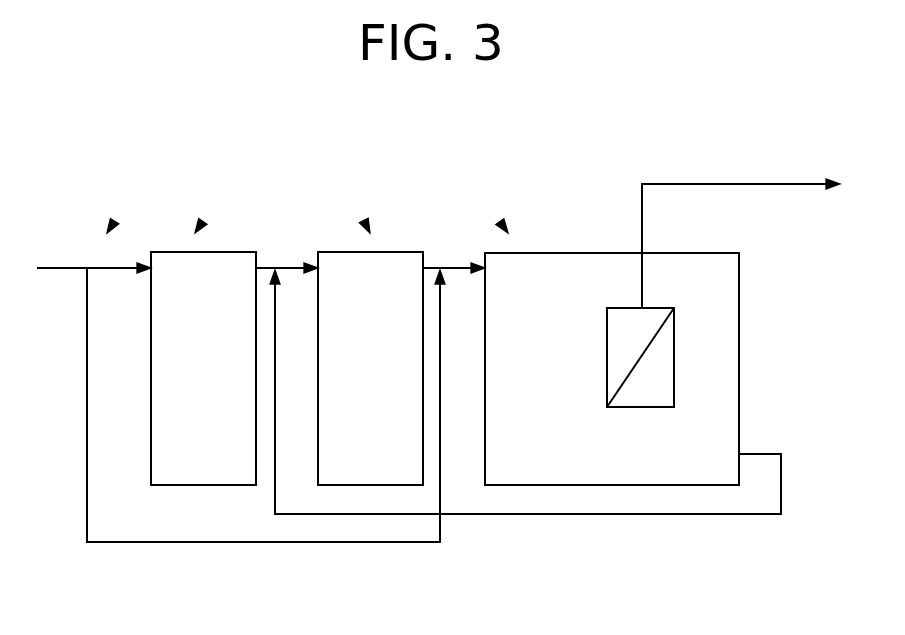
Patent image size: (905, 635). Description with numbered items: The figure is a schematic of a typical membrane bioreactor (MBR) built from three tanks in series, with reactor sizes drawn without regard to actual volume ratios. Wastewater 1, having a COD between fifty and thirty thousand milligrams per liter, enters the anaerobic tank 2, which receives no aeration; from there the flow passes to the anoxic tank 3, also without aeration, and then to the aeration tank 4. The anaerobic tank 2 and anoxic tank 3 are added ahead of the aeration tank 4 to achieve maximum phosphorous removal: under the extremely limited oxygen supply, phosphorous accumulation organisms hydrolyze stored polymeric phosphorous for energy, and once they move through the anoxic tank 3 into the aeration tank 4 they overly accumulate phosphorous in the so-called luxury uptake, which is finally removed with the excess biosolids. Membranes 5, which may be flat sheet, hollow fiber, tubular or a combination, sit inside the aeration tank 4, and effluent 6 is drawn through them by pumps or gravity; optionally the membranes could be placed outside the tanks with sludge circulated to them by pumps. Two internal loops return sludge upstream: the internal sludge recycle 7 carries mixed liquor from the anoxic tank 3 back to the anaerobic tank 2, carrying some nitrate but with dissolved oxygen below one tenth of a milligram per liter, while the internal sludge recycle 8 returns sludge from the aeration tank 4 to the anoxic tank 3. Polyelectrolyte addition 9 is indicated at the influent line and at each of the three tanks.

The wastewater 1 is at (67, 268).
The anaerobic tank 2 is at (210, 384).
The anoxic tank 3 is at (380, 384).
The aeration tank 4 is at (552, 384).
The membranes 5 is at (660, 371).
The effluent 6 is at (725, 184).
The internal sludge recycle from anoxic tank to anaerobic tank 7 is at (185, 542).
The internal sludge recycle from aeration tank to anoxic tank 8 is at (642, 514).
The polyelectrolyte addition 9 is at (502, 222).